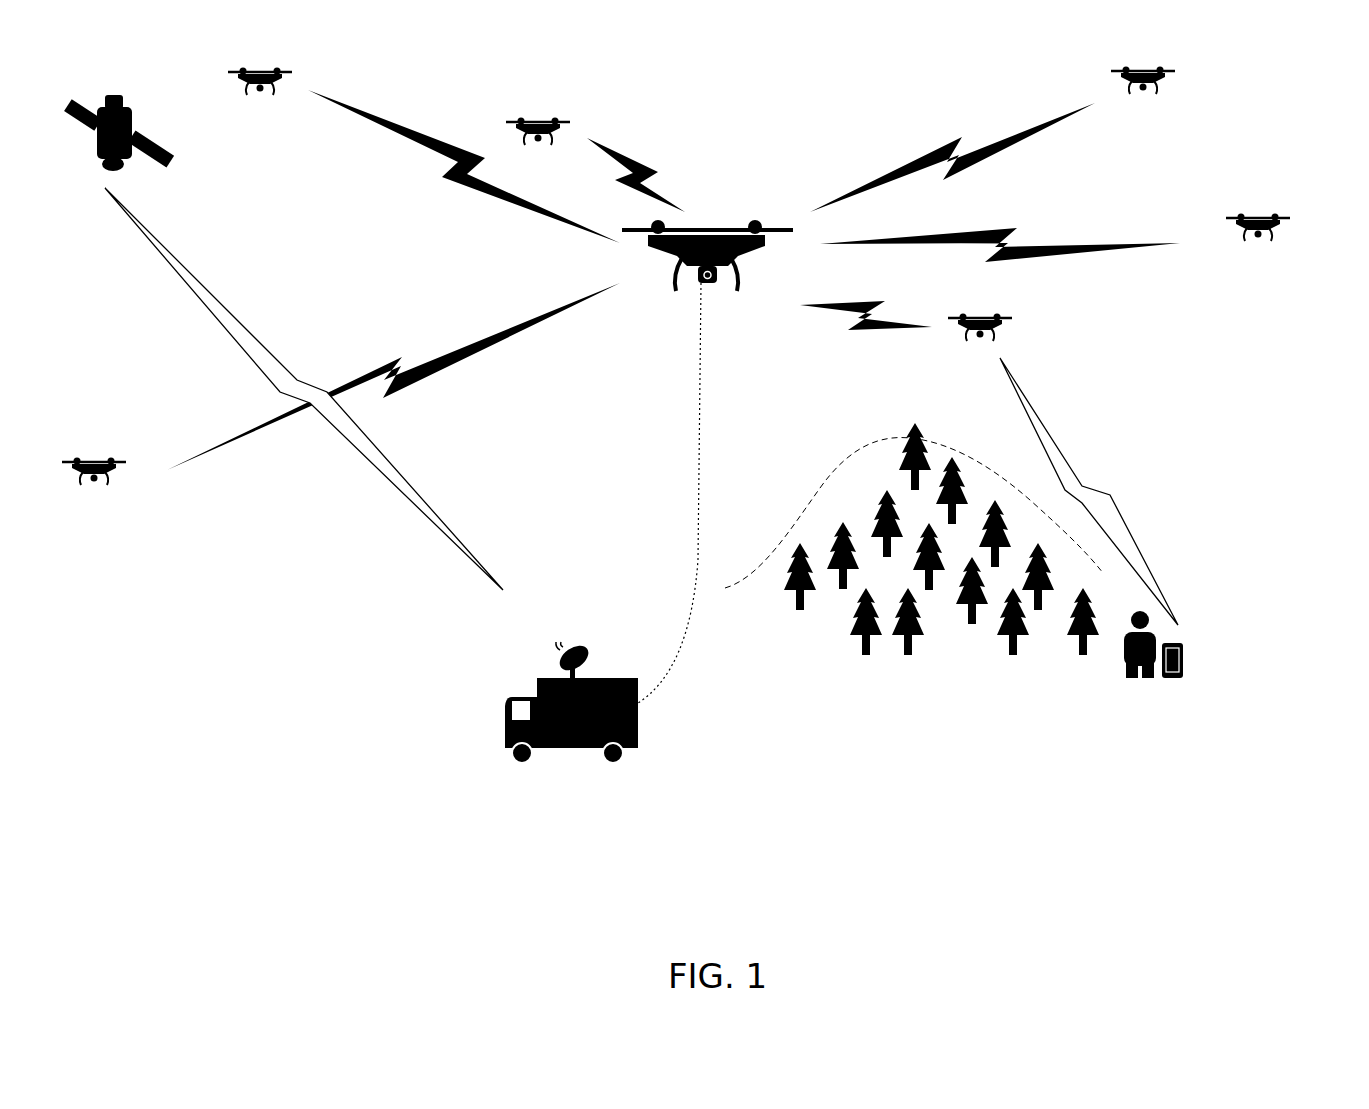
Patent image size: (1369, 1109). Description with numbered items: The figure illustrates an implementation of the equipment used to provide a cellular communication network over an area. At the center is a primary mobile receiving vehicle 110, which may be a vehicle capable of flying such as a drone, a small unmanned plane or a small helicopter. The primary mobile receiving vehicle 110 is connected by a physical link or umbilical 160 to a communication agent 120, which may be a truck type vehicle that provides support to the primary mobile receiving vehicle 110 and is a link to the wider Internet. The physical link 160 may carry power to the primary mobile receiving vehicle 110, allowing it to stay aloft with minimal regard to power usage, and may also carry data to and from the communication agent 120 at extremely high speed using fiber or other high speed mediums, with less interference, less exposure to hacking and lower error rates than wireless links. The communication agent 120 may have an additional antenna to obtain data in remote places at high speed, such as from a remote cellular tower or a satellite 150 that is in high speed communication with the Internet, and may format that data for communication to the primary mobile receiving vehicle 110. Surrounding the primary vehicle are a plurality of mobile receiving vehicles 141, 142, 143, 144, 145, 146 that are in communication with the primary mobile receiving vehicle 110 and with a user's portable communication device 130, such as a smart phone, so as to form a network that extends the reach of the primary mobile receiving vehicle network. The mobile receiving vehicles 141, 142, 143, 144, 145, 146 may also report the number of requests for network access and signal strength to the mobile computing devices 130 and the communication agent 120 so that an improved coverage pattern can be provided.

The primary mobile receiving vehicle 110 is at (710, 226).
The communication agent 120 is at (582, 748).
The portable communication device 130 is at (1172, 678).
The mobile receiving vehicle 141 is at (1173, 78).
The mobile receiving vehicle 142 is at (1265, 260).
The mobile receiving vehicle 143 is at (1013, 335).
The mobile receiving vehicle 144 is at (538, 100).
The mobile receiving vehicle 145 is at (258, 97).
The mobile receiving vehicle 146 is at (93, 498).
The satellite 150 is at (93, 158).
The physical link 160 is at (712, 388).